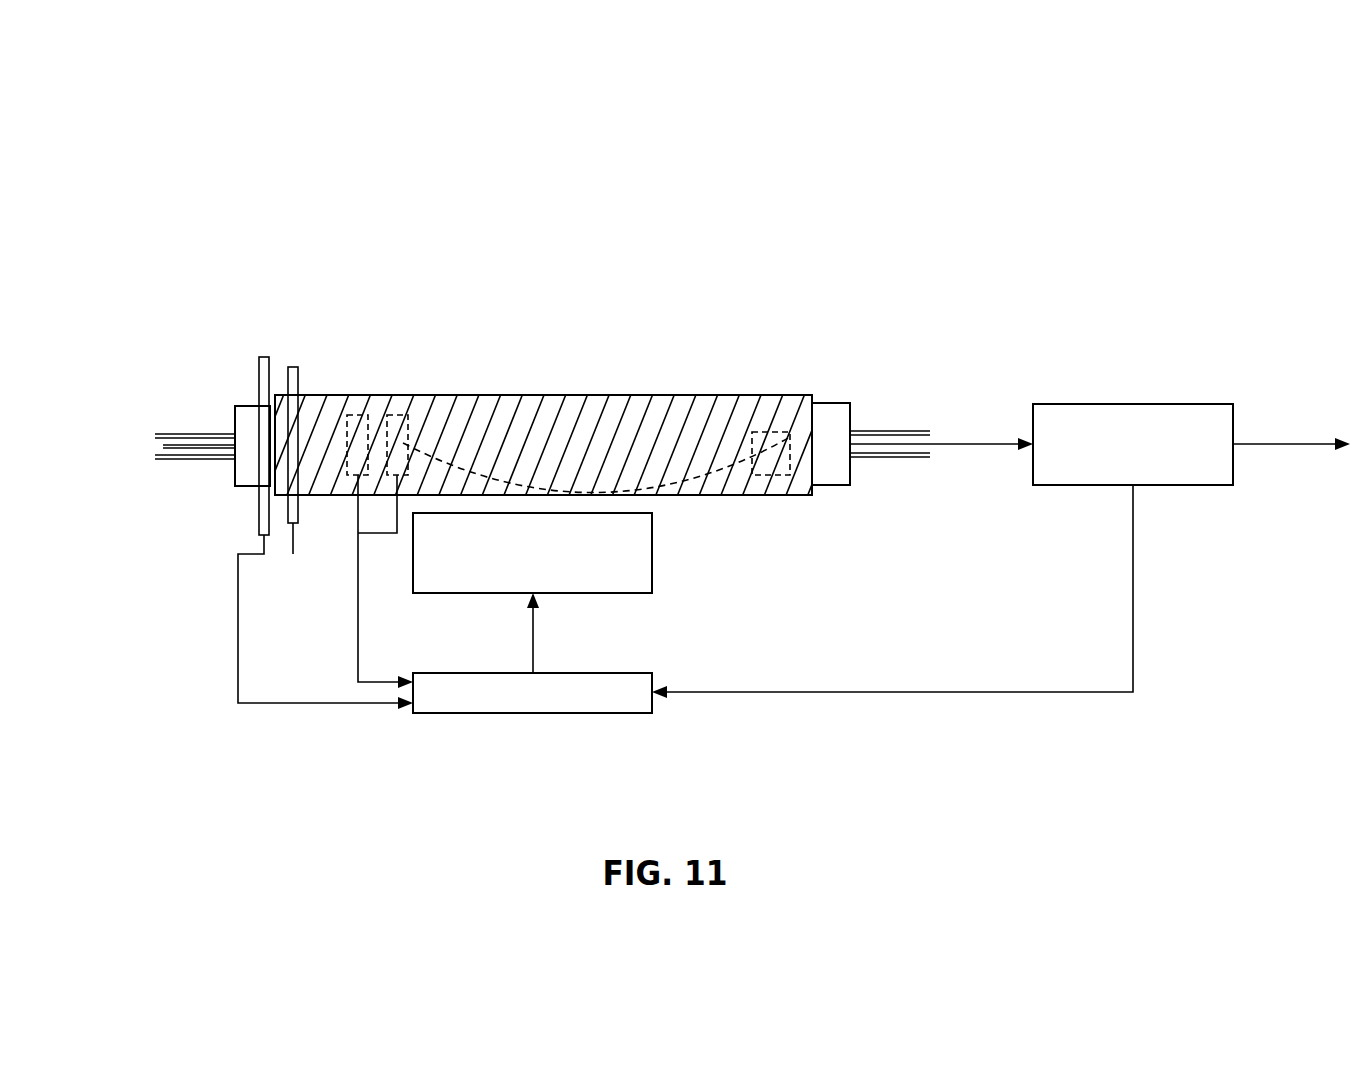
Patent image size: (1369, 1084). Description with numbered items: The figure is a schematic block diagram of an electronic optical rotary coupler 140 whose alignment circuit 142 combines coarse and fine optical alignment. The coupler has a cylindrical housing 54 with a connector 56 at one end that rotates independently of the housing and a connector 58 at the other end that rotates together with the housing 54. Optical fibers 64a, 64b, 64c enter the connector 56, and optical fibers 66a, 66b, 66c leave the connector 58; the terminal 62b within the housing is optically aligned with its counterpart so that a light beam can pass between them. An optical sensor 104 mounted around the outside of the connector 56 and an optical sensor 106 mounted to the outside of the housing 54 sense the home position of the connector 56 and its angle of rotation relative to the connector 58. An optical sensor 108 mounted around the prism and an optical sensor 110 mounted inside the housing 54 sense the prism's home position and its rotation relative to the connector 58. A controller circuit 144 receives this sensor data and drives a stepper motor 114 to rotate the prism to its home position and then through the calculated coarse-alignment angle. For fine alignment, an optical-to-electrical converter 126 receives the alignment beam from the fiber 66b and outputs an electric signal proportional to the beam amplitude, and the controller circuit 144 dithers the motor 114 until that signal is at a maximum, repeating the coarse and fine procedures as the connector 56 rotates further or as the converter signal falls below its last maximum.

The electronic optical rotary coupler 140 is at (808, 218).
The cylindrical housing 54 is at (575, 395).
The connector 56 is at (247, 405).
The connector 58 is at (830, 403).
The optical sensor 104 is at (264, 357).
The optical sensor 106 is at (293, 367).
The optical sensor 108 is at (358, 413).
The optical sensor 110 is at (397, 413).
The optical terminal 62b is at (773, 498).
The optical fiber 64a is at (193, 433).
The optical fiber 64b is at (163, 447).
The optical fiber 64c is at (187, 460).
The optical fiber 66a is at (895, 458).
The optical fiber 66b is at (975, 444).
The optical fiber 66c is at (880, 432).
The optical-to-electrical converter 126 is at (1133, 404).
The stepper motor 114 is at (652, 550).
The controller circuit 144 is at (640, 713).
The alignment circuit 142 is at (1118, 742).